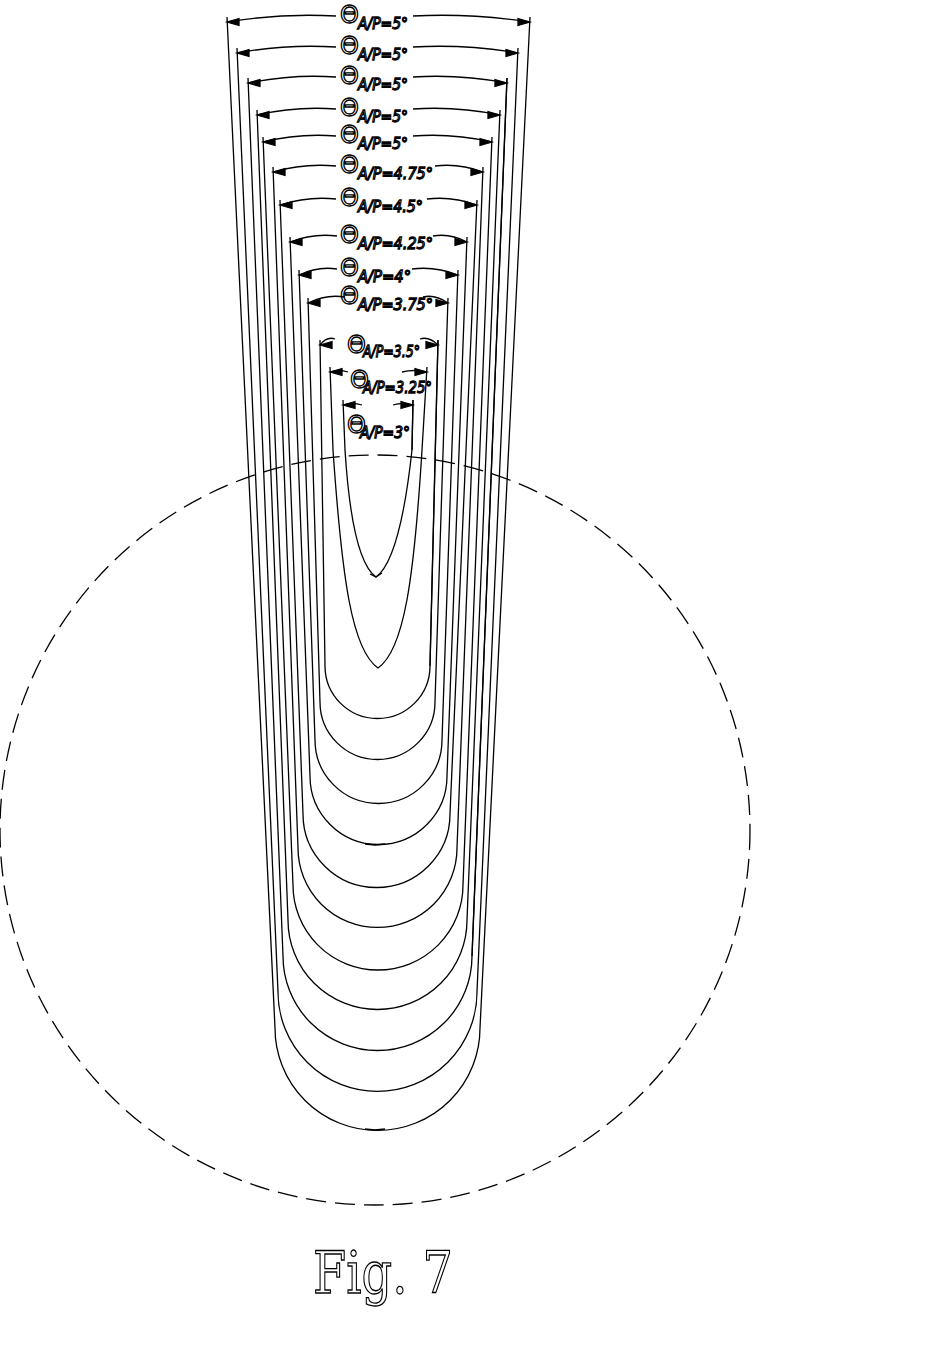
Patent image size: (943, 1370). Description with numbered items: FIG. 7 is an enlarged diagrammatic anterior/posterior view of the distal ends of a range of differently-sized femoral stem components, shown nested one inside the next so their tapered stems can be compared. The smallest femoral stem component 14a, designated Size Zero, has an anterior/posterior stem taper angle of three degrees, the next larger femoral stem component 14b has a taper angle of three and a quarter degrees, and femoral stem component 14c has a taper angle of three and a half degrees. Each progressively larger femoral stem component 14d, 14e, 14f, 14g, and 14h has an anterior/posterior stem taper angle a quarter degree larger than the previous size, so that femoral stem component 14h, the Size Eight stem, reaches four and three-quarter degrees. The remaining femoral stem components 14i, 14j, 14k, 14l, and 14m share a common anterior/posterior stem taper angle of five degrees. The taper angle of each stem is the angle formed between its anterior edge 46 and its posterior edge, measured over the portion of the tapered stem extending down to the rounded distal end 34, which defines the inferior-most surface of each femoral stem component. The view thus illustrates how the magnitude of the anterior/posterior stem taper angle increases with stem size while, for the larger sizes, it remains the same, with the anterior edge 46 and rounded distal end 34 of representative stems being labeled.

The smallest femoral stem component 14a is at (368, 507).
The femoral stem component 14b is at (368, 617).
The femoral stem component 14c is at (343, 675).
The femoral stem component 14d is at (355, 730).
The femoral stem component 14e is at (355, 777).
The femoral stem component 14f is at (355, 823).
The femoral stem component 14g is at (355, 862).
The femoral stem component 14h is at (355, 900).
The femoral stem component 14i is at (355, 942).
The femoral stem component 14j is at (355, 983).
The femoral stem component 14k is at (355, 1025).
The femoral stem component 14l is at (355, 1067).
The femoral stem component 14m is at (355, 1107).
The rounded distal end 34 is at (377, 578).
The anterior edge 46 is at (403, 512).